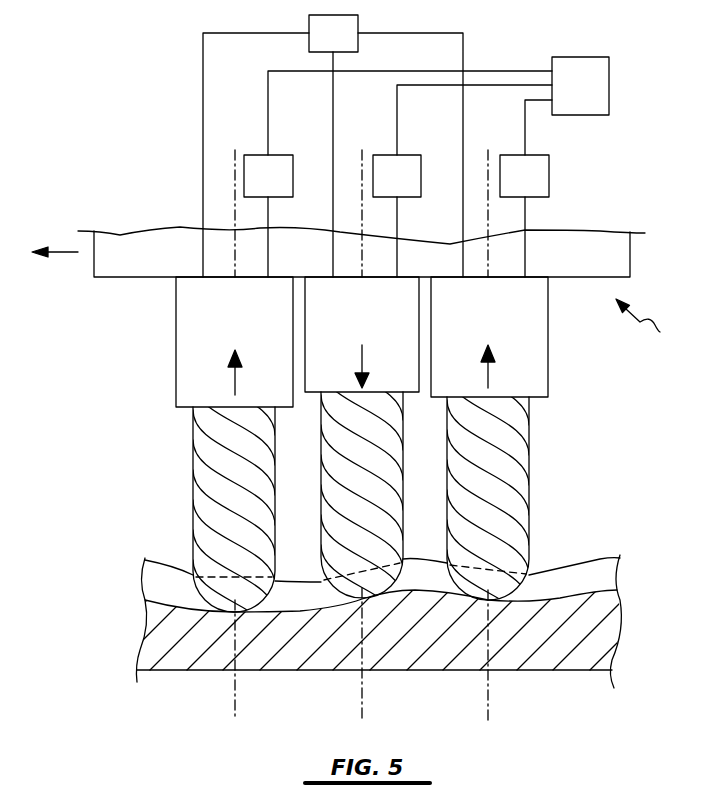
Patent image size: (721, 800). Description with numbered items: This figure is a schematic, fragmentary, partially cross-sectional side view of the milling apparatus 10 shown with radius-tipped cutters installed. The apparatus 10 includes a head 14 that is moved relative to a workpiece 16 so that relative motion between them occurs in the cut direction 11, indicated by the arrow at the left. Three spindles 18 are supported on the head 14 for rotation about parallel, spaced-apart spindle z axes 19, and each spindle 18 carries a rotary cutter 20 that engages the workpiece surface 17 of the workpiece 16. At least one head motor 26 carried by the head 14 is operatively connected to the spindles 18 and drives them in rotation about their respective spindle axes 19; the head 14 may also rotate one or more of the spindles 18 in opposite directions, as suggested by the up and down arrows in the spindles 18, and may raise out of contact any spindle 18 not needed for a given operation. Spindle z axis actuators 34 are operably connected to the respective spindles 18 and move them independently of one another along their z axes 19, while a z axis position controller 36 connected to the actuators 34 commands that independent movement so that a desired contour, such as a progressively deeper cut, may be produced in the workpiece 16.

The milling apparatus 10 is at (650, 326).
The cut direction 11 is at (63, 251).
The head 14 is at (616, 249).
The workpiece 16 is at (600, 615).
The workpiece surface 17 is at (600, 557).
The spindles 18 is at (203, 303).
The spindle z axes 19 is at (488, 670).
The rotary cutters 20 is at (235, 471).
The head motor 26 is at (333, 146).
The spindle z axis actuators 34 is at (392, 213).
The z axis position controller 36 is at (438, 167).